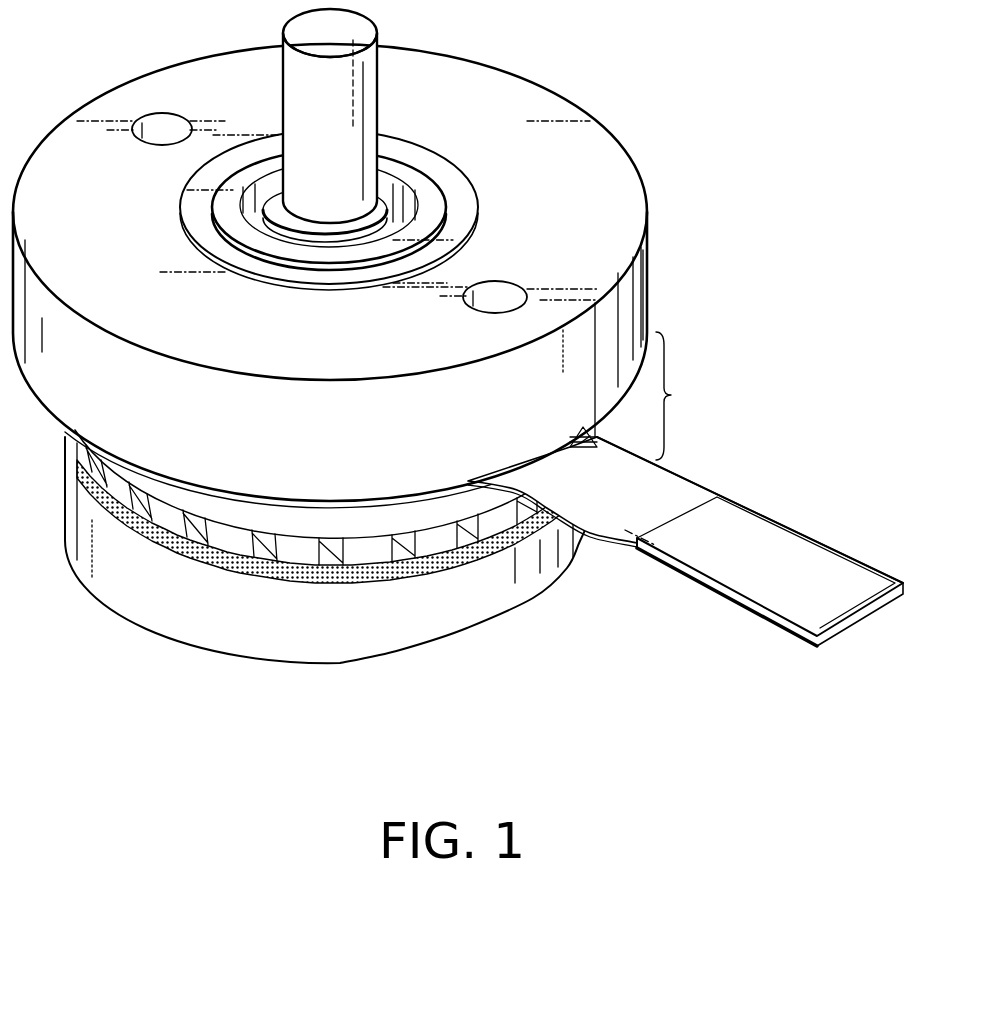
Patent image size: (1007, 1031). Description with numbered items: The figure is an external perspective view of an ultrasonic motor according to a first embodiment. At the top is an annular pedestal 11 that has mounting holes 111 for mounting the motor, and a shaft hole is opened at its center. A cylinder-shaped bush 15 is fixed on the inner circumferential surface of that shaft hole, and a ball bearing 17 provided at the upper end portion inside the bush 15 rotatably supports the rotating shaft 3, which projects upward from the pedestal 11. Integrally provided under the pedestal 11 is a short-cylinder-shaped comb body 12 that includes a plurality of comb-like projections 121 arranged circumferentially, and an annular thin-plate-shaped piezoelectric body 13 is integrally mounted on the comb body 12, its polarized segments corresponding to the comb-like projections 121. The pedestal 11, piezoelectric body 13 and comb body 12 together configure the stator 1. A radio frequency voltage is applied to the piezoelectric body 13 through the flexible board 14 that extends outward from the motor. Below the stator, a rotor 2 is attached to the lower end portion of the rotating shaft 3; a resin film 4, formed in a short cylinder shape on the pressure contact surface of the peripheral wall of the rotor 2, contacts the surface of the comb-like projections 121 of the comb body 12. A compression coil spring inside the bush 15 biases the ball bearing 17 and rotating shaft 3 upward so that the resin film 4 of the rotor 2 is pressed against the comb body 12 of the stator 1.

The stator 1 is at (676, 396).
The rotor 2 is at (527, 583).
The rotating shaft 3 is at (357, 108).
The resin film 4 is at (310, 583).
The annular pedestal 11 is at (590, 162).
The comb body 12 is at (330, 530).
The piezoelectric body 13 is at (180, 483).
The flexible board 14 is at (683, 497).
The bush 15 is at (363, 275).
The ball bearing 17 is at (263, 163).
The mounting holes 111 is at (157, 118).
The comb-like projections 121 is at (230, 543).